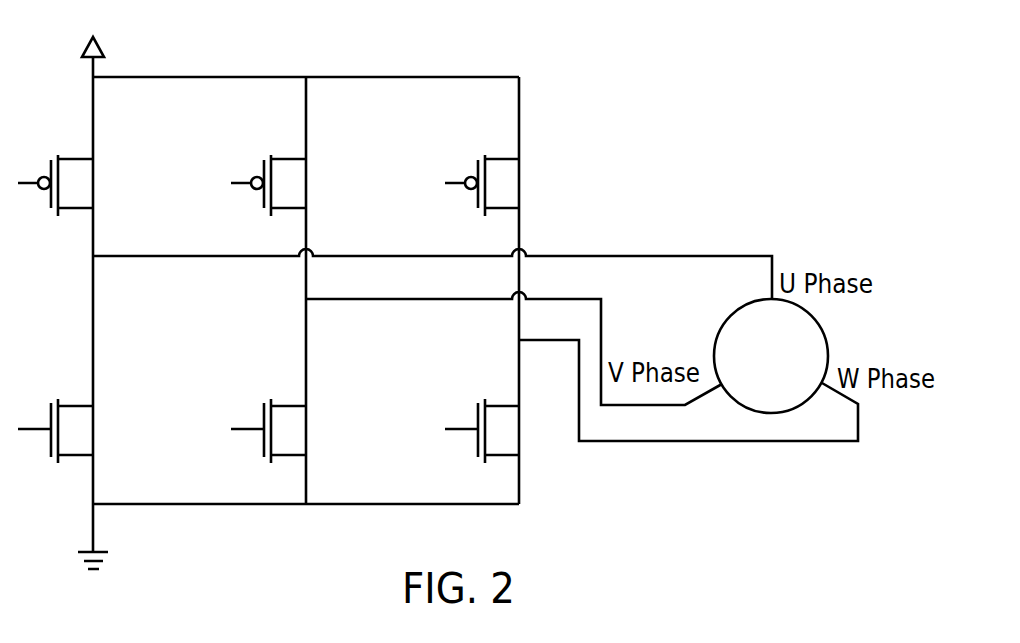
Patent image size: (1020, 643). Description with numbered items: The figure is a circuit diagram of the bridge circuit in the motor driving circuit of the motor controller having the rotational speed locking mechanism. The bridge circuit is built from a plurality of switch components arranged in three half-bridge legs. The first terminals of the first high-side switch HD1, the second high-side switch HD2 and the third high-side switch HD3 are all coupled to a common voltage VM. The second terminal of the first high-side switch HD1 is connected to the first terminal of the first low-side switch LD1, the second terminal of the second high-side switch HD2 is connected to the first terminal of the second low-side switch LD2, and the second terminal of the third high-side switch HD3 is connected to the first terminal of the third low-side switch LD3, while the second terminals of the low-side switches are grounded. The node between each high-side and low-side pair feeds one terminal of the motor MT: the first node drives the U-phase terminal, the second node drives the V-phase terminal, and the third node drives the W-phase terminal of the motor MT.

The common voltage VM is at (94, 30).
The first high-side switch HD1 is at (55, 168).
The second high-side switch HD2 is at (268, 168).
The third high-side switch HD3 is at (482, 168).
The first low-side switch LD1 is at (55, 415).
The second low-side switch LD2 is at (268, 416).
The third low-side switch LD3 is at (482, 416).
The motor MT is at (812, 337).